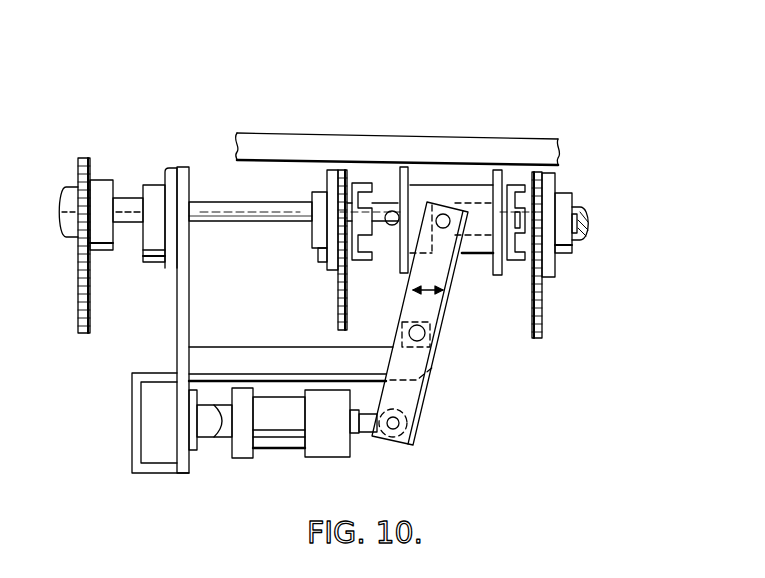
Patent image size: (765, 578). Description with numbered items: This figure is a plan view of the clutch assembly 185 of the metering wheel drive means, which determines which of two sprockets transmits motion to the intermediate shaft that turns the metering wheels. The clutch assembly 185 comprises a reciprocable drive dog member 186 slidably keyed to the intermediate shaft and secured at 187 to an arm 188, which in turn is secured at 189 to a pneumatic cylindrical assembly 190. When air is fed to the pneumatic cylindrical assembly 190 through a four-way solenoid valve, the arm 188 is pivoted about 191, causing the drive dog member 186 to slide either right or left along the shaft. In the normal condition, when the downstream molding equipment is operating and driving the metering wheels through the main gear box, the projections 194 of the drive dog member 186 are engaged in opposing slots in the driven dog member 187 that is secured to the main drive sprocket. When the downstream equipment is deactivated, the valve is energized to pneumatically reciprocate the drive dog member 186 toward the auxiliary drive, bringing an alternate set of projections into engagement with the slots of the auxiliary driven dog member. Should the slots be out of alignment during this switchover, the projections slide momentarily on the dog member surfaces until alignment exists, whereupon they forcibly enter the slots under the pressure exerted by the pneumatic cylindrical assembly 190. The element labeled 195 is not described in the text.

The clutch assembly 185 is at (563, 389).
The drive dog member 186 is at (471, 256).
The driven dog member 187 is at (443, 212).
The arm 188 is at (289, 346).
The connection to pneumatic cylinder assembly 189 is at (379, 441).
The pneumatic cylindrical assembly 190 is at (273, 457).
The pivot 191 is at (426, 338).
The projections 194 is at (391, 198).
The drive coupling 195 is at (512, 186).